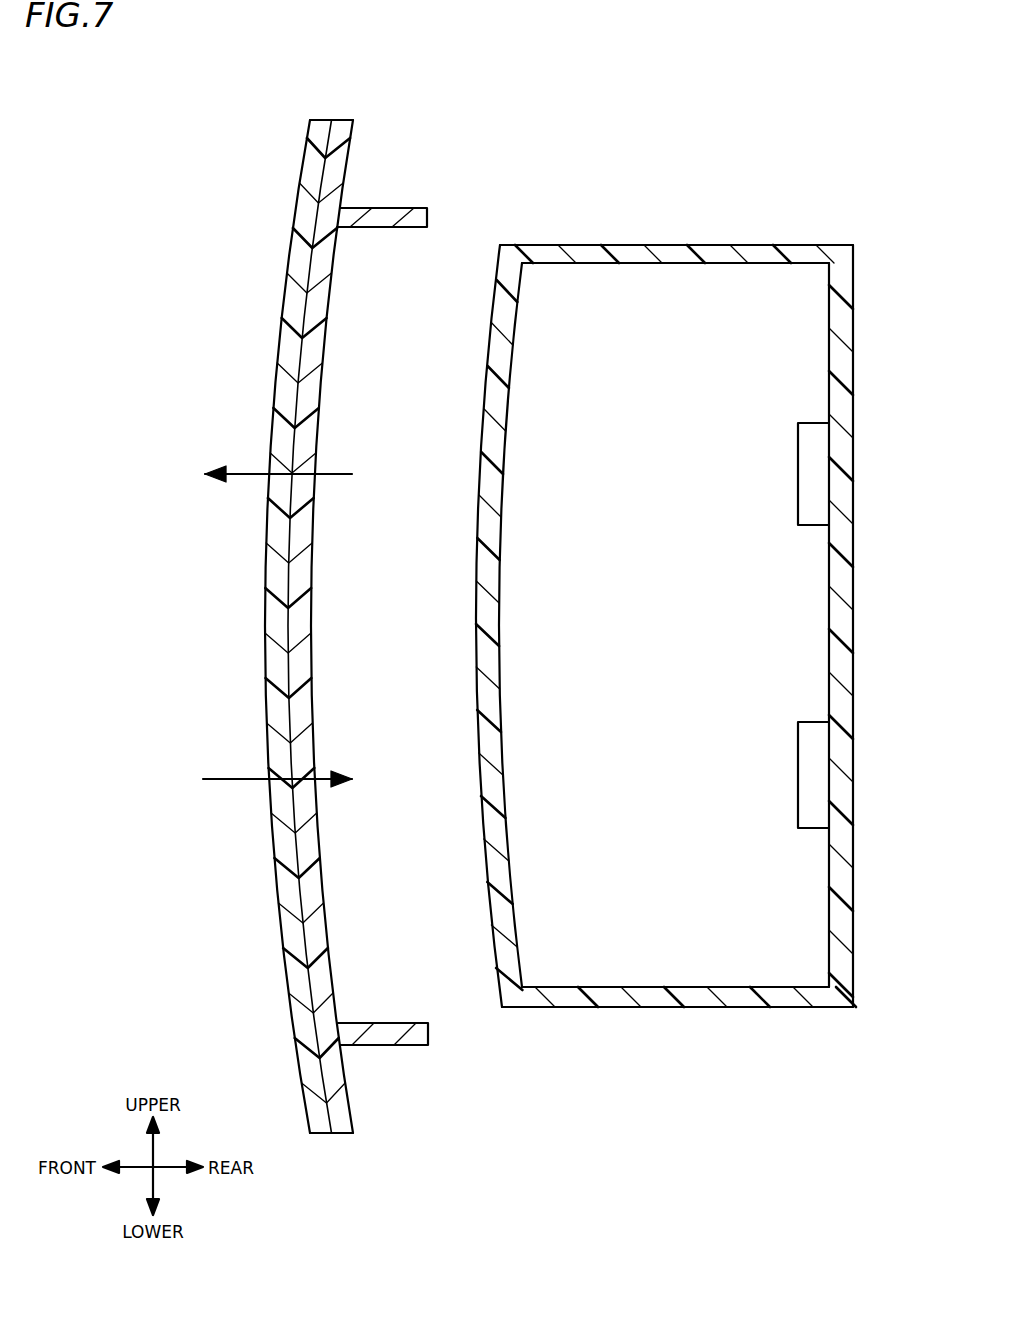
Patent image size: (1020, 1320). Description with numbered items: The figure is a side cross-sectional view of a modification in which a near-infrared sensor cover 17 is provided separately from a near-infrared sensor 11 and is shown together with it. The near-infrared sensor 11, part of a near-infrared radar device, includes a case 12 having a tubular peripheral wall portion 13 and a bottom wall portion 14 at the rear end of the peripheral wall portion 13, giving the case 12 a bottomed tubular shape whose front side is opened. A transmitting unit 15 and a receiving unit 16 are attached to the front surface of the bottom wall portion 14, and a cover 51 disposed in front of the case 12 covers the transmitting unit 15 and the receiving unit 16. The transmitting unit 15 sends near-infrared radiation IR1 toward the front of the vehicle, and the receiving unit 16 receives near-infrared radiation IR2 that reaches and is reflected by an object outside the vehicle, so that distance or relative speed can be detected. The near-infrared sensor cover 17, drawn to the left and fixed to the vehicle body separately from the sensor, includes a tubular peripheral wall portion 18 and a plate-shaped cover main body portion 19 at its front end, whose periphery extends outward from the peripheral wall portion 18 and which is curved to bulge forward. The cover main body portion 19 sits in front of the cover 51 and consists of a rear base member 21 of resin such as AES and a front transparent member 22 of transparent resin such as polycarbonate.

The near-infrared sensor 11 is at (685, 609).
The case 12 is at (697, 558).
The peripheral wall portion 13 is at (772, 253).
The bottom wall portion 14 is at (848, 282).
The transmitting unit 15 is at (810, 472).
The receiving unit 16 is at (810, 778).
The near-infrared sensor cover 17 is at (338, 605).
The peripheral wall portion 18 is at (382, 586).
The cover main body portion 19 is at (311, 121).
The base member 21 is at (308, 383).
The transparent member 22 is at (280, 402).
The cover 51 is at (487, 610).
The near-infrared radiation IR1 is at (327, 478).
The near-infrared radiation IR2 is at (318, 777).